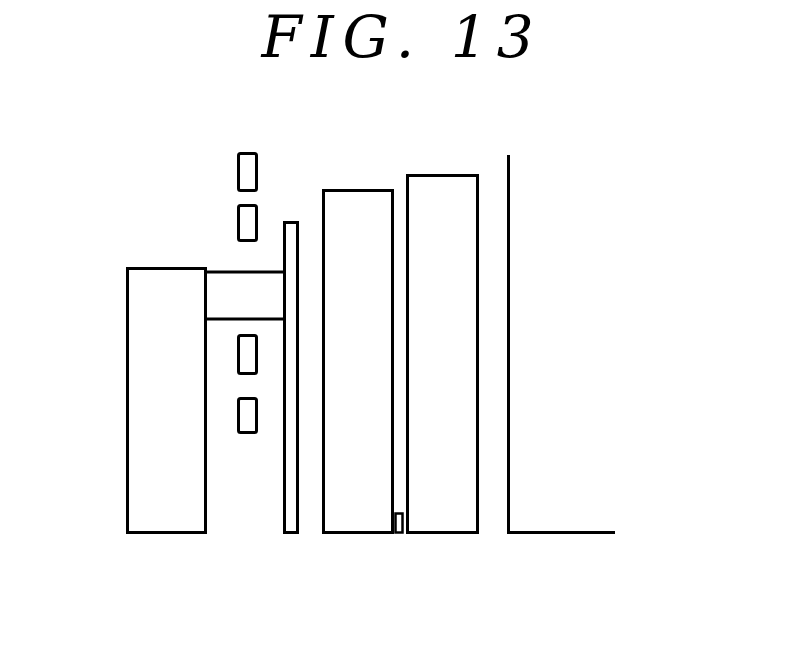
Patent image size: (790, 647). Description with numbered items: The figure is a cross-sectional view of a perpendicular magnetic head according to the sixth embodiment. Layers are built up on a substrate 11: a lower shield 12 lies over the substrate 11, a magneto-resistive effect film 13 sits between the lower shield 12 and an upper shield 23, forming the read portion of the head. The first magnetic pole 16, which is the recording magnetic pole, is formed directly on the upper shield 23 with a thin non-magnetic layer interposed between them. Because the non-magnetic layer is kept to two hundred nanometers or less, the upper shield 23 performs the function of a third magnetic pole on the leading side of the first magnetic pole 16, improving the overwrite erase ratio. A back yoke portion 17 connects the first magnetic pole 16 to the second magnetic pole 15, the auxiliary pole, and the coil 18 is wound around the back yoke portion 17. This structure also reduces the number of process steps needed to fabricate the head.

The substrate 11 is at (543, 467).
The lower shield 12 is at (447, 532).
The magneto-resistive effect film 13 is at (398, 534).
The second magnetic pole 15 is at (140, 342).
The first magnetic pole 16 is at (289, 533).
The back yoke portion 17 is at (230, 287).
The coil 18 is at (250, 177).
The upper shield 23 is at (358, 533).